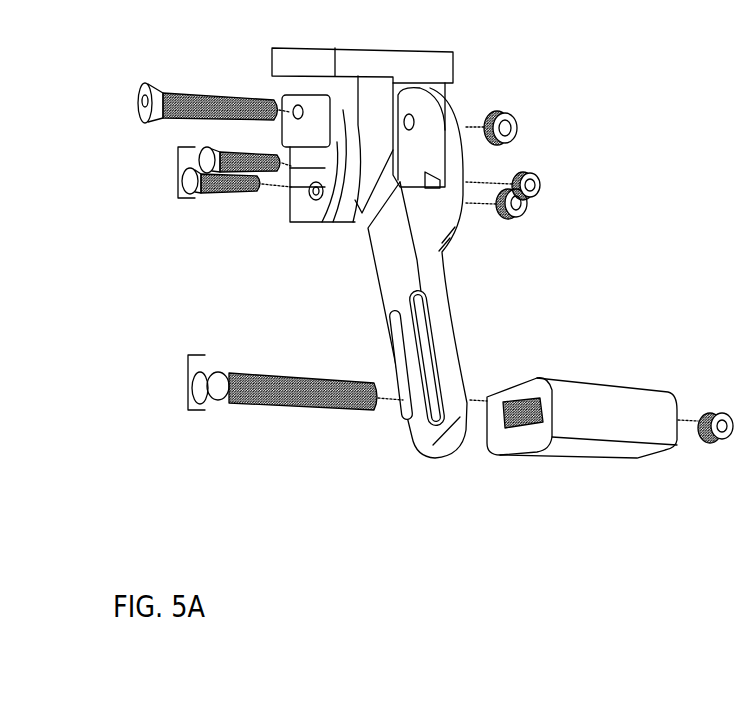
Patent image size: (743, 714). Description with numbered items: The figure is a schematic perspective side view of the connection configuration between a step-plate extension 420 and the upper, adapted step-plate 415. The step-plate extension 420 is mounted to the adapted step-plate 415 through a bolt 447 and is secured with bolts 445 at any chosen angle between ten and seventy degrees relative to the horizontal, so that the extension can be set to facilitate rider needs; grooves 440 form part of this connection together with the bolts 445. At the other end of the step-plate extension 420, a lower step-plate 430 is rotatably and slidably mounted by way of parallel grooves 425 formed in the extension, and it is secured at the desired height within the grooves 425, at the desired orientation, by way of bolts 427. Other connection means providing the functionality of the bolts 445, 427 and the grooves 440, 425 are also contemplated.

The adapted step-plate 415 is at (452, 60).
The step-plate extension 420 is at (383, 251).
The parallel grooves 425 is at (402, 350).
The bolts 427 is at (277, 382).
The lower step-plate 430 is at (585, 383).
The grooves 440 is at (313, 194).
The bolts 445 is at (216, 172).
The bolt 447 is at (148, 97).